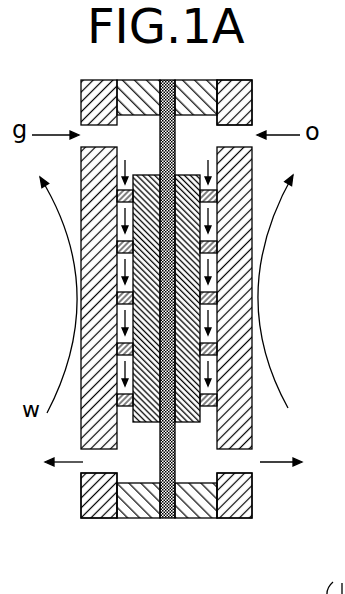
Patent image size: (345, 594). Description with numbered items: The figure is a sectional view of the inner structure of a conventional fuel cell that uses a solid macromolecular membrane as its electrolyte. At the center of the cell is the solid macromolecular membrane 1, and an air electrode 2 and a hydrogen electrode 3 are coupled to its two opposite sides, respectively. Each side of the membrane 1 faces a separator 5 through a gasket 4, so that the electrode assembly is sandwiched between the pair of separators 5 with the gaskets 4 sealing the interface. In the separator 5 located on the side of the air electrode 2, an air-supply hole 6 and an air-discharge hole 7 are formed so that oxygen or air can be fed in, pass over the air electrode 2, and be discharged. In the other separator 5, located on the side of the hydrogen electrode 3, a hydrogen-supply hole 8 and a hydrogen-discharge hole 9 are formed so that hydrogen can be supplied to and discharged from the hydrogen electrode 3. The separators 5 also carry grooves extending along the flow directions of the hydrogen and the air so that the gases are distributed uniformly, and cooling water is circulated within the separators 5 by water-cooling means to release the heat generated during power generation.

The solid macromolecular membrane 1 is at (167, 405).
The air electrode 2 is at (193, 310).
The hydrogen electrode 3 is at (140, 277).
The gasket 4 is at (192, 507).
The separator 5 is at (98, 243).
The air-supply hole 6 is at (257, 125).
The air-discharge hole 7 is at (253, 473).
The hydrogen-supply hole 8 is at (81, 125).
The hydrogen-discharge hole 9 is at (82, 475).